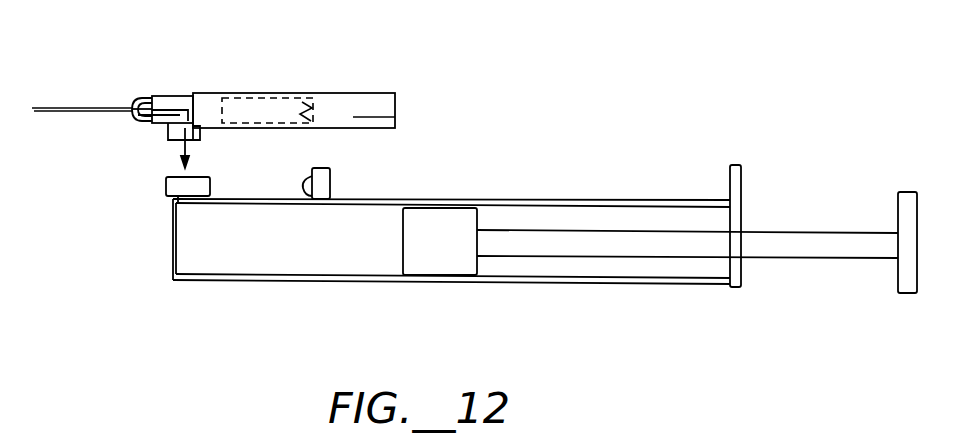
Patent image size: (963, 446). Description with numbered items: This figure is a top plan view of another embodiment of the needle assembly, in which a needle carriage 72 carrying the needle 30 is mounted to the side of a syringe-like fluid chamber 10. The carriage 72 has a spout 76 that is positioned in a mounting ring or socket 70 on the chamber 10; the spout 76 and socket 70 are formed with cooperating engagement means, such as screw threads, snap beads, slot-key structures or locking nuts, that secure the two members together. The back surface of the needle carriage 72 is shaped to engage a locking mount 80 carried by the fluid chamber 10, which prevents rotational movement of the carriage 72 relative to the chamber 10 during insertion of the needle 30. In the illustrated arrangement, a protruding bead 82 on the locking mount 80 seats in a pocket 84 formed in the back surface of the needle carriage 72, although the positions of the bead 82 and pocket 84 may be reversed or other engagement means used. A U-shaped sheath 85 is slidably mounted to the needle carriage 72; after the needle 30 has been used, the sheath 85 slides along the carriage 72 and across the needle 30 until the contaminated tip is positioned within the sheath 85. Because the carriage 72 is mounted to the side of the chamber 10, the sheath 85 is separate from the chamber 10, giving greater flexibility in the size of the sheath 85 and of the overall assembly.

The fluid chamber 10 is at (270, 275).
The needle 30 is at (52, 109).
The mounting ring or socket 70 is at (210, 185).
The needle carriage 72 is at (176, 95).
The spout 76 is at (168, 140).
The locking mount 80 is at (330, 182).
The protruding bead 82 is at (309, 187).
The pocket 84 is at (307, 103).
The U-shaped sheath 85 is at (395, 117).